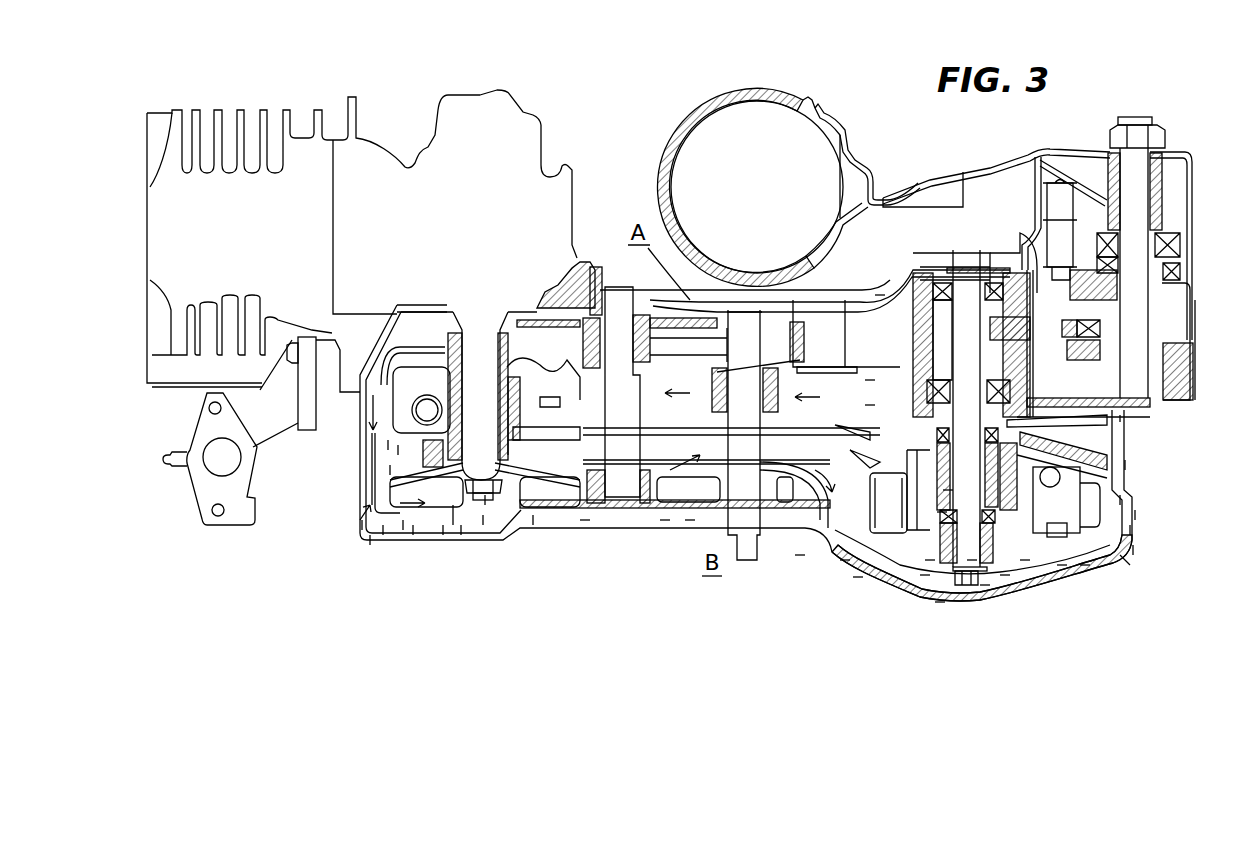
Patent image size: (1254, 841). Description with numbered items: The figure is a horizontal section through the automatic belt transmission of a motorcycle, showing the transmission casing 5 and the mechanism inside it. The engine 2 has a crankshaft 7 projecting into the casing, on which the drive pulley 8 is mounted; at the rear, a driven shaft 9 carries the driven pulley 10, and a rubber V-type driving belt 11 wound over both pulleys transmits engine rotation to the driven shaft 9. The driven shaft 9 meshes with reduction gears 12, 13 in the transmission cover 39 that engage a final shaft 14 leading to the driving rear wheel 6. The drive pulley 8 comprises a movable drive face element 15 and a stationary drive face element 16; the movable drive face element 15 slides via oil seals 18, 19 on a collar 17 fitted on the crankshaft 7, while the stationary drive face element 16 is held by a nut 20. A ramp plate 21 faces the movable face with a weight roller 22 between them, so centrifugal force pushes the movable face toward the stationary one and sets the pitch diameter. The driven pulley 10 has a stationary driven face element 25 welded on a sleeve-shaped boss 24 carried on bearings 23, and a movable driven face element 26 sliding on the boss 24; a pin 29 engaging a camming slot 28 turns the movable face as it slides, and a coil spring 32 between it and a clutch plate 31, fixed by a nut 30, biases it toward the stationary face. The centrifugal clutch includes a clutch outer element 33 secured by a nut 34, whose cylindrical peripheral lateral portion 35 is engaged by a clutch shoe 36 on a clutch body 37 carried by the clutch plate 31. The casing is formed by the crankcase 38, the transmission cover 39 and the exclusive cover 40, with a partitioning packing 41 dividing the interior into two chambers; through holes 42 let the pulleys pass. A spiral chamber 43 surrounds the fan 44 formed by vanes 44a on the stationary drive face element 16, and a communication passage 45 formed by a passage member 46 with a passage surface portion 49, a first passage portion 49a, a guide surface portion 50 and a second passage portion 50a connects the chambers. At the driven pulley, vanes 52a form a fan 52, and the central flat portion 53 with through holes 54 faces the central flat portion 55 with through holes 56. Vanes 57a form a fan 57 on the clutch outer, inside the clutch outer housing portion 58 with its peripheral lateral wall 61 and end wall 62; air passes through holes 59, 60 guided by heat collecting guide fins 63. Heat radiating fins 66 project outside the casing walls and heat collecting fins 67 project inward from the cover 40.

The engine 2 is at (217, 112).
The transmission casing 5 is at (648, 533).
The driving rear wheel 6 is at (822, 105).
The crankshaft 7 is at (485, 520).
The drive pulley 8 is at (400, 450).
The driven shaft 9 is at (972, 560).
The driven pulley 10 is at (1130, 465).
The driving belt 11 is at (455, 520).
The reduction gear 12 is at (1000, 295).
The reduction gear 13 is at (1095, 325).
The final shaft 14 is at (1133, 165).
The movable drive face element 15 is at (390, 445).
The stationary drive face element 16 is at (535, 520).
The collar 17 is at (508, 448).
The oil seal 18 is at (503, 340).
The oil seal 19 is at (455, 510).
The nut 20 is at (487, 500).
The ramp plate 21 is at (415, 385).
The weight roller 22 is at (392, 470).
The bearing 23 is at (940, 295).
The sleeve-shaped boss 24 is at (930, 560).
The stationary driven face element 25 is at (870, 380).
The movable driven face element 26 is at (1100, 477).
The camming slot 28 is at (942, 512).
The pin 29 is at (948, 490).
The nut 30 is at (1005, 575).
The clutch plate 31 is at (1025, 560).
The coil spring 32 is at (925, 575).
The clutch outer element 33 is at (1125, 560).
The nut 34 is at (985, 585).
The cylindrical peripheral lateral portion 35 is at (845, 560).
The clutch shoe 36 is at (1110, 555).
The clutch body 37 is at (1140, 515).
The crankcase 38 is at (583, 262).
The transmission cover 39 is at (880, 295).
The exclusive cover 40 is at (1135, 490).
The partitioning packing 41 is at (670, 425).
The through hole 42 is at (722, 423).
The spiral chamber 43 is at (385, 530).
The fan 44 is at (435, 530).
The vane 44a is at (520, 540).
The communication passage 45 is at (415, 530).
The passage member 46 is at (405, 525).
The passage surface portion 49 is at (365, 525).
The first passage portion 49a is at (372, 540).
The guide surface portion 50 is at (463, 530).
The second passage portion 50a is at (445, 530).
The fan 52 is at (870, 405).
The vane 52a is at (1125, 418).
The central flat portion 53 is at (893, 417).
The through hole 54 is at (937, 373).
The central flat portion 55 is at (1125, 500).
The through hole 56 is at (1108, 445).
The fan 57 is at (1135, 530).
The vane 57a is at (1138, 550).
The clutch outer housing portion 58 is at (944, 613).
The through hole 59 is at (1062, 565).
The through hole 60 is at (1015, 540).
The peripheral lateral wall 61 is at (800, 555).
The end wall 62 is at (858, 577).
The heat collecting guide fin 63 is at (1085, 565).
The heat radiating fin 66 is at (840, 300).
The heat collecting fin 67 is at (790, 535).